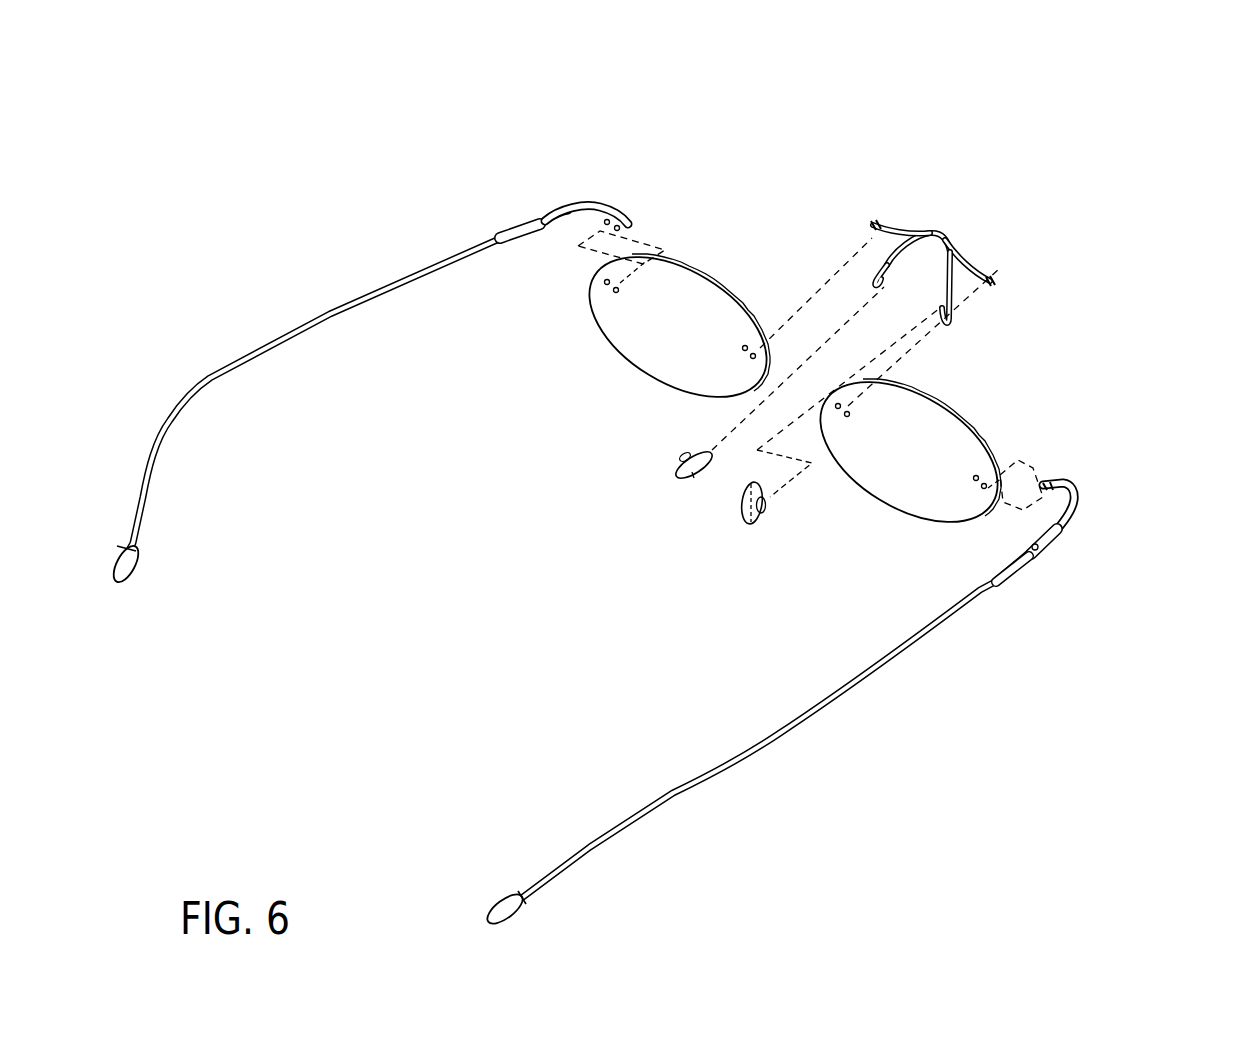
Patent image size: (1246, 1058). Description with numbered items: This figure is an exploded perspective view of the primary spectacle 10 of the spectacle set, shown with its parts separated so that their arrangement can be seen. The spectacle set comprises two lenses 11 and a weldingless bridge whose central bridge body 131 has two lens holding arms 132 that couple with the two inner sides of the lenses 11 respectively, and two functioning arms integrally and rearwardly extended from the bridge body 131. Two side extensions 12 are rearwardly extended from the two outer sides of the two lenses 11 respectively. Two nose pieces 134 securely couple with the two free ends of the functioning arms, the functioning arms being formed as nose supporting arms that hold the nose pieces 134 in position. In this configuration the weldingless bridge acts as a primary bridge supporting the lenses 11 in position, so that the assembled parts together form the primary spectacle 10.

The primary spectacle 10 is at (448, 611).
The lens 11 is at (617, 328).
The side extension 12 is at (357, 303).
The bridge body 131 is at (938, 232).
The lens holding arm 132 is at (888, 222).
The nose piece 134 is at (693, 477).